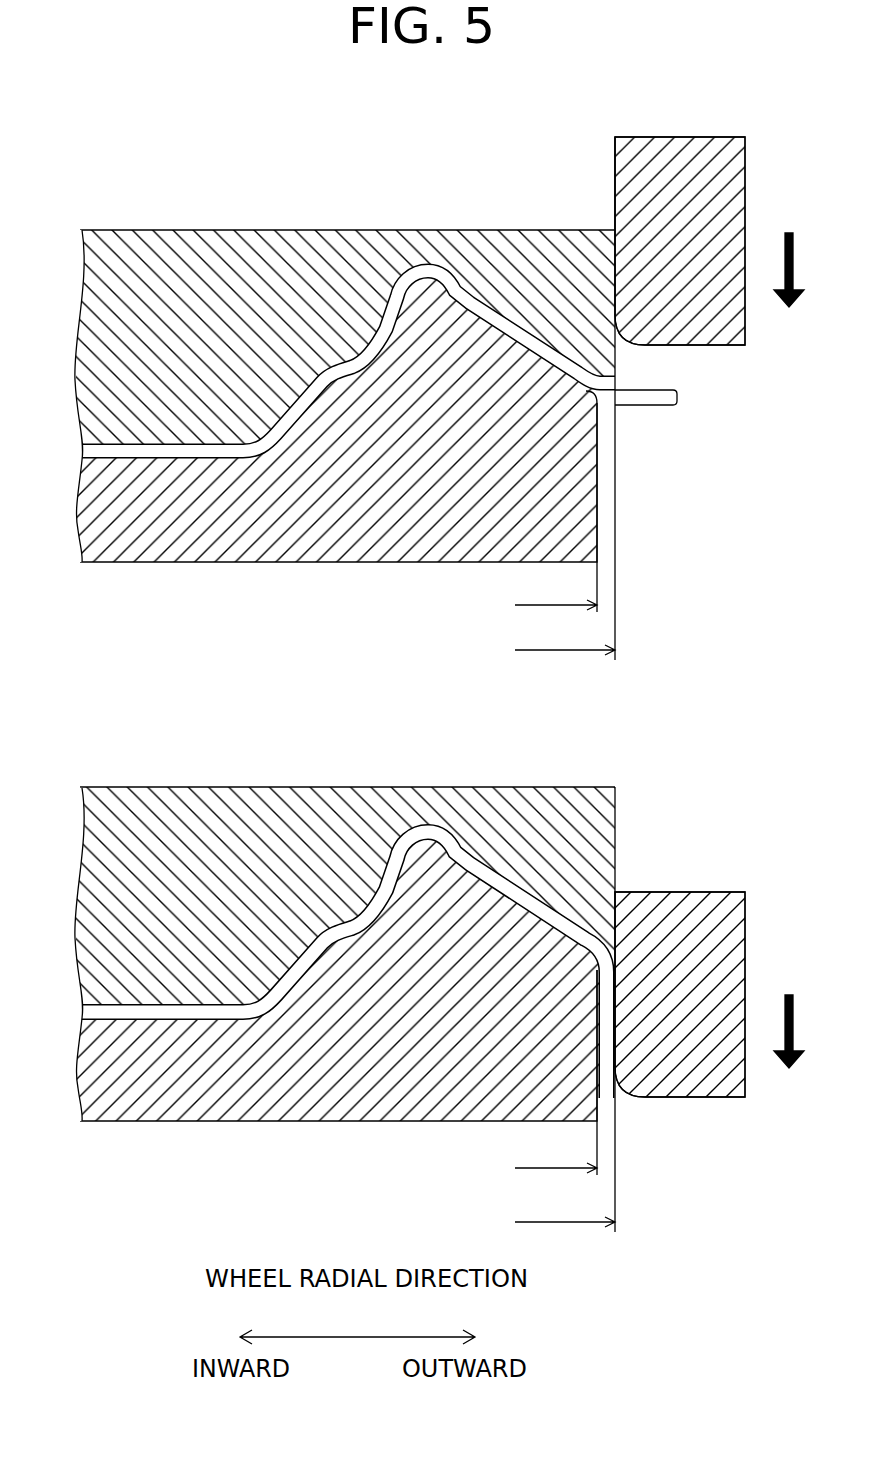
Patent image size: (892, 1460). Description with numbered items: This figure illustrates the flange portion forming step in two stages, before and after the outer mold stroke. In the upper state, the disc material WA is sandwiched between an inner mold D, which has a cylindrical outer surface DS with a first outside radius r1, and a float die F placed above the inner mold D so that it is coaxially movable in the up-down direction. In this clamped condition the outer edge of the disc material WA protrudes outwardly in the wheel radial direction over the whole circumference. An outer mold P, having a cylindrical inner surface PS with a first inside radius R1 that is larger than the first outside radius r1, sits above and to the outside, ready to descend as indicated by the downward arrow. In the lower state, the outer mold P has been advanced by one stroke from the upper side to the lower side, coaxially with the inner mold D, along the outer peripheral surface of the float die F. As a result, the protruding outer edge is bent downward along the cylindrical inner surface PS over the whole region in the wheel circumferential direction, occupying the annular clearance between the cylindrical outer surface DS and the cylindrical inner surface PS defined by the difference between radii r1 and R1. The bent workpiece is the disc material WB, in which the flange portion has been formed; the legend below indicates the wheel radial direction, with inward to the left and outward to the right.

The float die F is at (210, 230).
The inner mold D is at (280, 535).
The outer mold P is at (683, 158).
The cylindrical inner surface PS is at (613, 170).
The cylindrical outer surface DS is at (597, 499).
The disc material WA is at (660, 427).
The disc material WB is at (609, 1000).
The first outside radius r1 is at (556, 868).
The first inside radius R1 is at (565, 924).